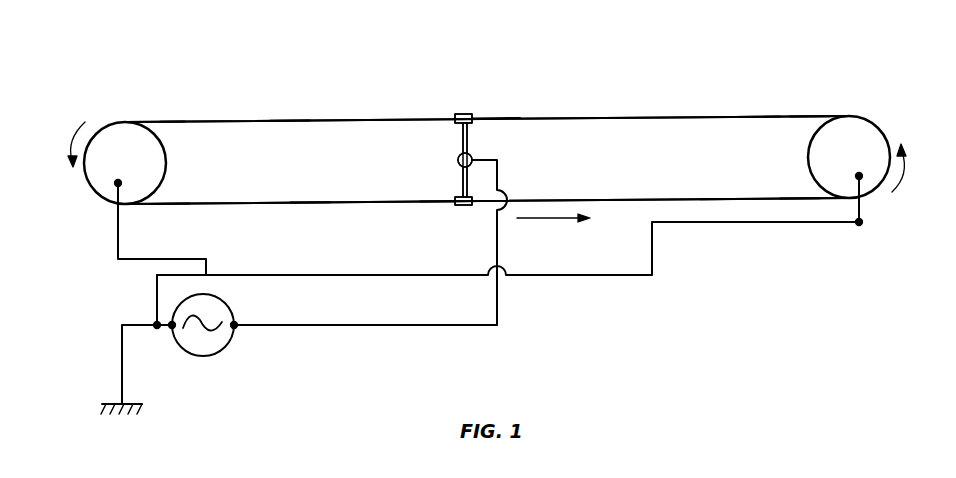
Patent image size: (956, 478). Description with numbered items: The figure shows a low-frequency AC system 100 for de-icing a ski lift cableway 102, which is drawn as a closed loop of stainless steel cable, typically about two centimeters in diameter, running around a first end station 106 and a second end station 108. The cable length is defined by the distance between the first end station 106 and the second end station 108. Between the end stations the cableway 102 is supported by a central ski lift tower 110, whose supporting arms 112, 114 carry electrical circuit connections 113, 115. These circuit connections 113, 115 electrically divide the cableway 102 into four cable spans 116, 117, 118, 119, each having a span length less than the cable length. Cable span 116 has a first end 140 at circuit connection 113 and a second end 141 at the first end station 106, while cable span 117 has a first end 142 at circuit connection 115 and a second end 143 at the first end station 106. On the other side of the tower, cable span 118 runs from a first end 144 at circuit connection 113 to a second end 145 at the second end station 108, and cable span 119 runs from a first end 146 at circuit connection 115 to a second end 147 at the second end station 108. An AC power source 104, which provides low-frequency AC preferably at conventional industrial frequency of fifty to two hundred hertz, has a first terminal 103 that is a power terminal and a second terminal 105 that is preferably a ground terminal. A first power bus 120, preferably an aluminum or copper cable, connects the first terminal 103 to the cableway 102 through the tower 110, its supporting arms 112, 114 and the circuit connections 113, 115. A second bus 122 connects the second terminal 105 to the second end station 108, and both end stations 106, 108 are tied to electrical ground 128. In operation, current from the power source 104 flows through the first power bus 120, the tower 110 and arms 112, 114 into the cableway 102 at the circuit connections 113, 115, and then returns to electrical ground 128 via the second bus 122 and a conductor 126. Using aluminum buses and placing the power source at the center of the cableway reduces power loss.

The low-frequency AC system 100 is at (226, 48).
The ski lift cableway 102 is at (648, 117).
The first terminal 103 is at (237, 323).
The AC power source 104 is at (225, 351).
The second terminal 105 is at (170, 330).
The first end station 106 is at (103, 120).
The second end station 108 is at (860, 125).
The ski lift tower 110 is at (469, 158).
The supporting arm 112 is at (460, 143).
The circuit connection 113 is at (467, 112).
The supporting arm 114 is at (461, 180).
The circuit connection 115 is at (458, 206).
The cable span 116 is at (292, 120).
The cable span 117 is at (313, 202).
The cable span 118 is at (757, 117).
The cable span 119 is at (723, 197).
The first power bus 120 is at (430, 326).
The second bus 122 is at (600, 275).
The conductor 126 is at (120, 340).
The electrical ground 128 is at (142, 406).
The first end of cable span 116 140 is at (440, 116).
The second end of cable span 116 141 is at (172, 120).
The first end of cable span 117 142 is at (448, 199).
The second end of cable span 117 143 is at (167, 203).
The first end of cable span 118 144 is at (497, 118).
The second end of cable span 118 145 is at (810, 116).
The first end of cable span 119 146 is at (485, 203).
The second end of cable span 119 147 is at (800, 197).